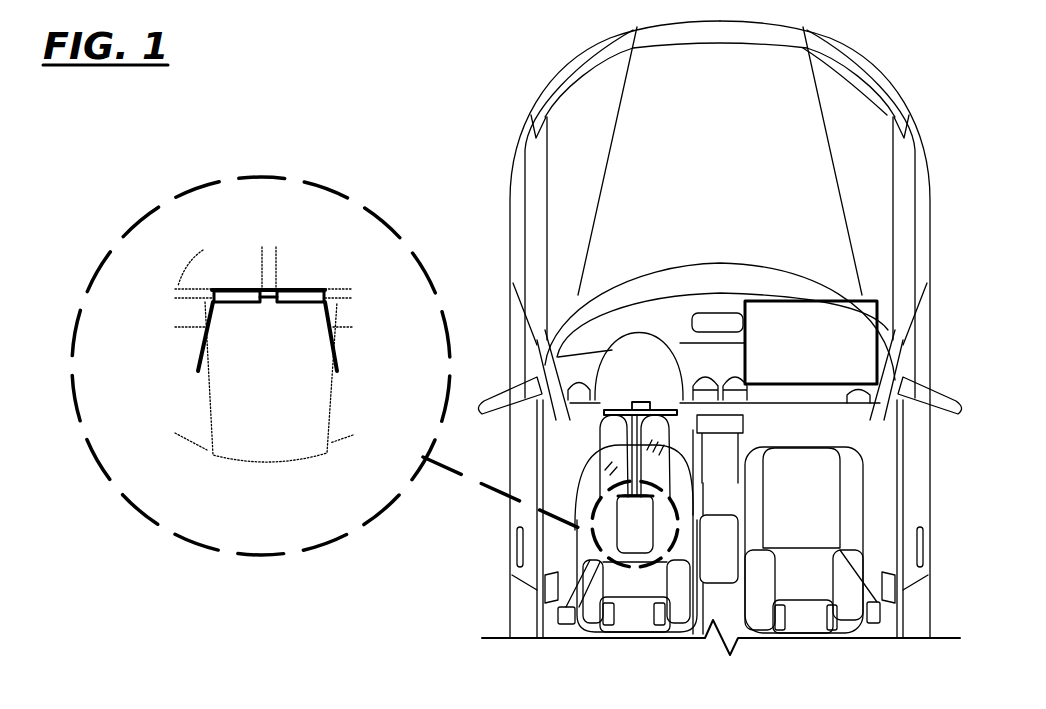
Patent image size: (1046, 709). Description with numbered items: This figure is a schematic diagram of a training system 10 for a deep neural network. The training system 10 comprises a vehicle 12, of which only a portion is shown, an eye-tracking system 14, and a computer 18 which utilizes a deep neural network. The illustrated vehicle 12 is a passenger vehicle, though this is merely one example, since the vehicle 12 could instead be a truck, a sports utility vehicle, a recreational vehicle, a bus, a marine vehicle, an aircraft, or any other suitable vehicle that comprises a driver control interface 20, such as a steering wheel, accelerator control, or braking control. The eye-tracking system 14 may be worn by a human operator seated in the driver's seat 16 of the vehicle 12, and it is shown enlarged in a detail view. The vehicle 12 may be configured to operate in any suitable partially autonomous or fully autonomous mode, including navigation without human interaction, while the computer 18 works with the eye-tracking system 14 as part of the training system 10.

The training system 10 is at (354, 88).
The vehicle 12 is at (546, 66).
The eye-tracking system 14 is at (210, 318).
The driver's seat 16 is at (692, 474).
The computer 18 is at (826, 368).
The driver control interface 20 is at (660, 401).